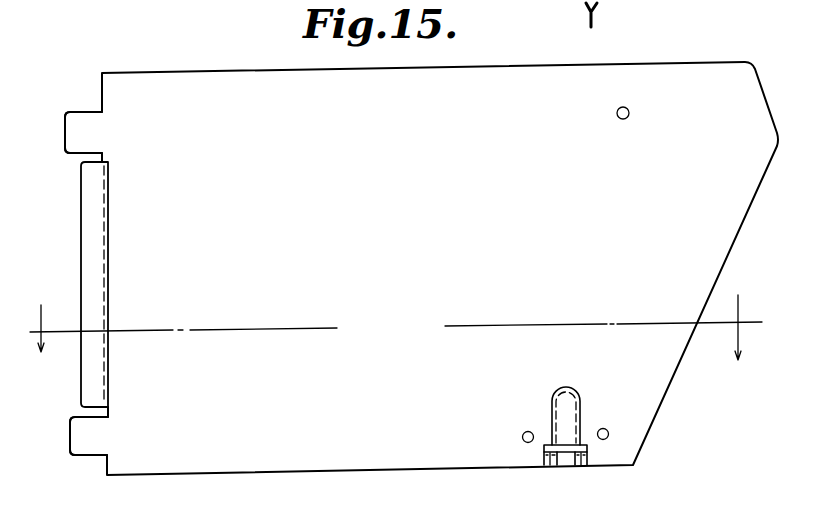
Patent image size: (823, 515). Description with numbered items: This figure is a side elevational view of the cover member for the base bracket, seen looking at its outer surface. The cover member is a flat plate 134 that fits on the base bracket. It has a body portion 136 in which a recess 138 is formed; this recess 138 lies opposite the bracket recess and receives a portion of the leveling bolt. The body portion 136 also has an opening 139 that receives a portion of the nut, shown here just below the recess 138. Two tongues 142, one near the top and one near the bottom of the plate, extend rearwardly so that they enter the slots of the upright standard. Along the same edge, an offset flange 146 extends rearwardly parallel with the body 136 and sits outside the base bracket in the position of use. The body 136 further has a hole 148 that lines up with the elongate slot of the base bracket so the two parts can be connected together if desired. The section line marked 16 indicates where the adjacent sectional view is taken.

The flat plate 134 is at (686, 58).
The body portion 136 is at (396, 258).
The recess 138 is at (578, 402).
The opening 139 is at (566, 452).
The tongues 142 is at (81, 128).
The offset flange 146 is at (90, 221).
The hole 148 is at (630, 112).
The section line 16- 16 is at (390, 339).